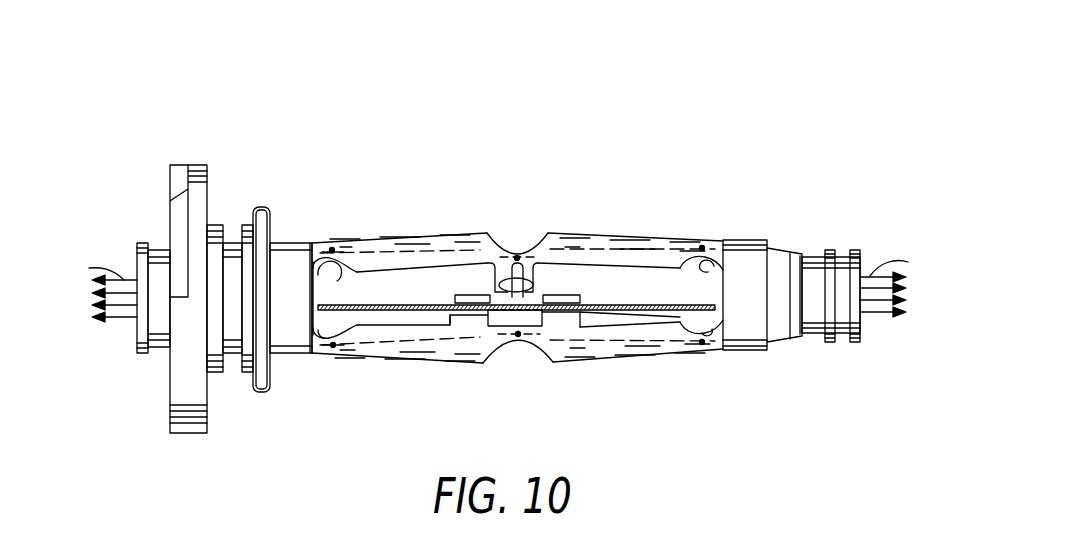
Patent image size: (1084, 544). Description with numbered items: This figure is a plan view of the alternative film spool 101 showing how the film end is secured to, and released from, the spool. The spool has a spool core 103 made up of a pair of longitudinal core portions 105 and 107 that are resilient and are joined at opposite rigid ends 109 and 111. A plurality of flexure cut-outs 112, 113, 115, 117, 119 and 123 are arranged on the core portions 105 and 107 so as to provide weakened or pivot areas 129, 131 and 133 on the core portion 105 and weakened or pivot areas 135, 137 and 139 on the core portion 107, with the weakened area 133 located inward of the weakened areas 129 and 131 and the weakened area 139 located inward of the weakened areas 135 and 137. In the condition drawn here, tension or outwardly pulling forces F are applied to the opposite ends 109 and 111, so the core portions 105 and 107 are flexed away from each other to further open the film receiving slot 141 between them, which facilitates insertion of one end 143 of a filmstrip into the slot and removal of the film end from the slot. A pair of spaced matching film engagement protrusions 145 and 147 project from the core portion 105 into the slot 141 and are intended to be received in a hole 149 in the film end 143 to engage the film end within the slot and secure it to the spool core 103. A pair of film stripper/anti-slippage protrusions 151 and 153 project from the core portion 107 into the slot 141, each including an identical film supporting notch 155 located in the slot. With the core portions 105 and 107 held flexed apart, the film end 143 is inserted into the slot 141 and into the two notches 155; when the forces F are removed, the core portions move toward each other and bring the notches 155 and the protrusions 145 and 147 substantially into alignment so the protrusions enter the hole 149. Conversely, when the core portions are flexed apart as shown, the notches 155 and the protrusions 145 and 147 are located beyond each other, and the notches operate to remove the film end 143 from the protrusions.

The film spool 101 is at (480, 136).
The spool core 103 is at (438, 229).
The core portion 105 is at (613, 237).
The core portion 107 is at (640, 358).
The rigid end 109 is at (292, 243).
The rigid end 111 is at (757, 240).
The flexure cut-out 112 is at (322, 272).
The flexure cut-out 113 is at (710, 263).
The flexure cut-out 115 is at (507, 270).
The flexure cut-out 117 is at (320, 340).
The flexure cut-out 119 is at (723, 330).
The flexure cut-out 123 is at (519, 337).
The weakened or pivot area 129 is at (333, 249).
The weakened or pivot area 131 is at (701, 246).
The weakened or pivot area 133 is at (533, 266).
The weakened or pivot area 135 is at (333, 348).
The weakened or pivot area 137 is at (703, 345).
The weakened or pivot area 139 is at (510, 330).
The film receiving slot 141 is at (369, 288).
The film end 143 is at (658, 303).
The film engagement protrusion 145 is at (480, 324).
The film engagement protrusion 147 is at (560, 325).
The hole 149 is at (522, 328).
The film stripper/anti-slippage protrusion 151 is at (516, 256).
The film stripper/anti-slippage protrusion 153 is at (552, 310).
The film supporting notch 155 is at (467, 297).